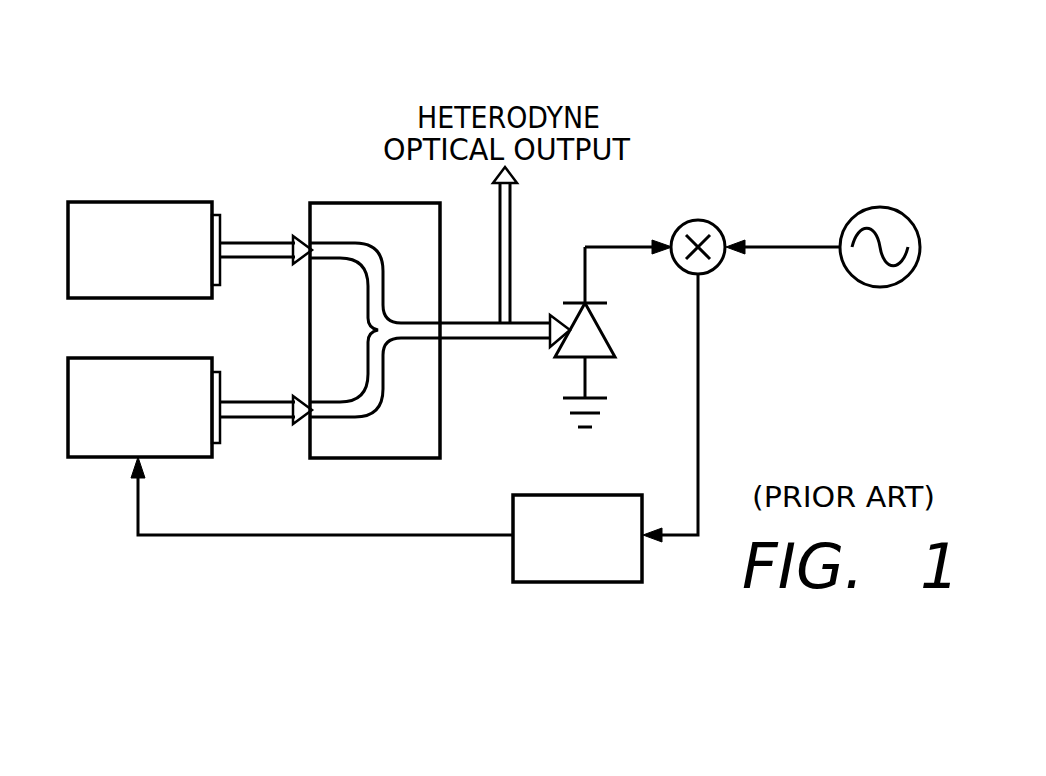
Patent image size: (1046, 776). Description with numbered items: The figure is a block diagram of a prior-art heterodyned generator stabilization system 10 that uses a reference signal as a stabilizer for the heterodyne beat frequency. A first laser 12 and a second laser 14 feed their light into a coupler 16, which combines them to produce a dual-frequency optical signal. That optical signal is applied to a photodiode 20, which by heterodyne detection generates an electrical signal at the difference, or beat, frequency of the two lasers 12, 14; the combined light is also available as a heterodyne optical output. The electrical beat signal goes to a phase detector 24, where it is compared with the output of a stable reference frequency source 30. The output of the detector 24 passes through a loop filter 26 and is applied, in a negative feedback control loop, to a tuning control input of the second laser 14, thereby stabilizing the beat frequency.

The heterodyned generator stabilization system 10 is at (262, 148).
The first laser 12 is at (200, 208).
The second laser 14 is at (200, 365).
The coupler 16 is at (323, 202).
The photodiode 20 is at (597, 338).
The phase detector 24 is at (725, 227).
The loop filter 26 is at (520, 502).
The stable reference frequency source 30 is at (900, 220).